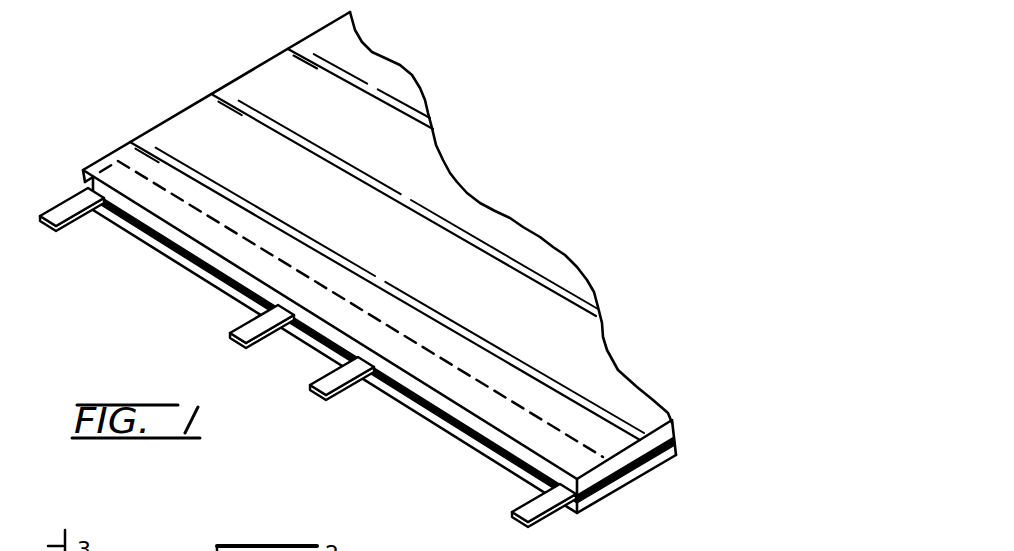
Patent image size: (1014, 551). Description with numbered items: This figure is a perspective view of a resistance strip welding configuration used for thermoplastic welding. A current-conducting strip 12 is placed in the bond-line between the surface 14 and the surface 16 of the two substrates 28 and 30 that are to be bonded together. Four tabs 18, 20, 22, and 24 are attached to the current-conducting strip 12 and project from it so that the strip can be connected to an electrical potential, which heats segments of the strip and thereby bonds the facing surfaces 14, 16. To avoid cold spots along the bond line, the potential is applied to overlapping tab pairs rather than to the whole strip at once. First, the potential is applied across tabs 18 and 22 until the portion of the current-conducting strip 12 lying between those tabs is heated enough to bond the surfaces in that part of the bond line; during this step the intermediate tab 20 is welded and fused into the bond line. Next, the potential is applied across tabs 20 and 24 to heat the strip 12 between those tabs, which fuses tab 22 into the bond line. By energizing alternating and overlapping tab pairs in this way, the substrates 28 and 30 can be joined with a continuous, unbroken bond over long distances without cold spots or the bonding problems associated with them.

The current-conducting strip 12 is at (208, 233).
The surface 14 is at (604, 458).
The surface 16 is at (613, 482).
The tab 18 is at (63, 218).
The tab 20 is at (259, 331).
The tab 22 is at (362, 377).
The tab 24 is at (547, 506).
The substrate 28 is at (525, 297).
The substrate 30 is at (660, 460).